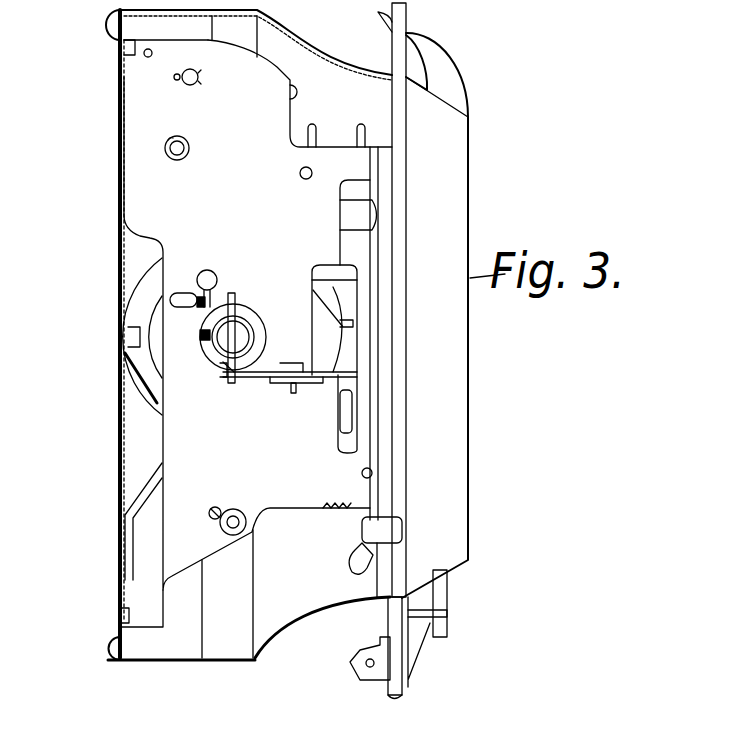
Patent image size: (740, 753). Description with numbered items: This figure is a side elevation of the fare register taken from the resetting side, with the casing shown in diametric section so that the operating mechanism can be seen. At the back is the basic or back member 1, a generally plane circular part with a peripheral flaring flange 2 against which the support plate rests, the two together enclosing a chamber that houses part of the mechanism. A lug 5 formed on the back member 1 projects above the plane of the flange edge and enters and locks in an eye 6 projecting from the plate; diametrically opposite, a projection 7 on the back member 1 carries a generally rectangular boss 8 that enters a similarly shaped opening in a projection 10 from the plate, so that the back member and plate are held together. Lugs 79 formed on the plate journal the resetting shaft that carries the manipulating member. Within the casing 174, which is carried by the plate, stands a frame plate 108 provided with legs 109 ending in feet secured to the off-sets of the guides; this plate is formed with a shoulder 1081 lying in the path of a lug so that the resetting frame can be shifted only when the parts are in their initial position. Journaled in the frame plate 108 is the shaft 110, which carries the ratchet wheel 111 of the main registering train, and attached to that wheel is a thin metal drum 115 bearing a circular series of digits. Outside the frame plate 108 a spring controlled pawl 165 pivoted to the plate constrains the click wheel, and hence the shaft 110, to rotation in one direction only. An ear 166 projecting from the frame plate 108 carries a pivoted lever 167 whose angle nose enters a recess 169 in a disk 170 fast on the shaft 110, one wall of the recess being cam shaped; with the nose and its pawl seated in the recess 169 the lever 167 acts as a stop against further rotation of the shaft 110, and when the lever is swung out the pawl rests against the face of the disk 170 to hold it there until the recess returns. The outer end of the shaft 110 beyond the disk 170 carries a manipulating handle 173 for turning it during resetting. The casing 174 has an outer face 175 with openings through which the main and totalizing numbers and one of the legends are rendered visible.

The basic or back member 1 is at (457, 422).
The peripheral flaring flange 2 is at (448, 572).
The lug 5 is at (407, 58).
The eye 6 is at (393, 57).
The projection 7 is at (407, 662).
The boss 8 is at (370, 680).
The projection 10 is at (392, 695).
The lugs 79 is at (380, 525).
The frame plate 108 is at (197, 197).
The shoulder 1081 is at (270, 217).
The legs 109 is at (348, 160).
The shaft 110 is at (220, 347).
The ratchet wheel 111 is at (147, 373).
The thin metal drum 115 is at (137, 330).
The spring controlled pawl 165 is at (203, 290).
The ear 166 is at (275, 385).
The lever 167 is at (263, 370).
The recess 169 is at (223, 362).
The disk 170 is at (213, 296).
The manipulating handle 173 is at (237, 295).
The casing 174 is at (285, 630).
The outer face 175 is at (115, 458).